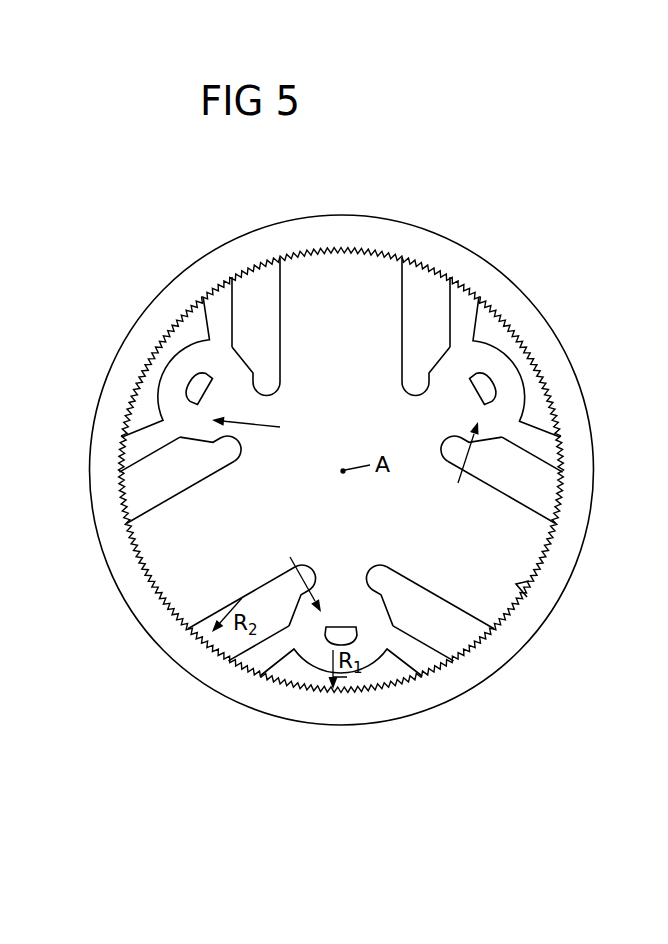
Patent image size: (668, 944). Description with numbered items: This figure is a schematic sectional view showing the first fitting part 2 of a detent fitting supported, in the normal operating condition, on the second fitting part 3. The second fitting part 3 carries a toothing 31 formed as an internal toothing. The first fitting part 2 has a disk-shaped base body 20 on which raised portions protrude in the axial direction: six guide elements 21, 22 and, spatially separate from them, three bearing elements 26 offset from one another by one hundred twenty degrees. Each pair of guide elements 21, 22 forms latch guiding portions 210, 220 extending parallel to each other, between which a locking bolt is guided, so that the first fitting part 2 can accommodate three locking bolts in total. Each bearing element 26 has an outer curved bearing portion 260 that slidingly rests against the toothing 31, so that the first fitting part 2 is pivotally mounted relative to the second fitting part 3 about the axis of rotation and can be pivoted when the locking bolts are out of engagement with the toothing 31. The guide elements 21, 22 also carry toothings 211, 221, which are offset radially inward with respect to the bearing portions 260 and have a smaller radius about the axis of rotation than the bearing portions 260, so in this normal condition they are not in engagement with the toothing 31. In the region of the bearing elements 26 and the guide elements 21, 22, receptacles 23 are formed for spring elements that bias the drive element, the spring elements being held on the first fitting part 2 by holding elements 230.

The first fitting part 2 is at (343, 482).
The second fitting part 3 is at (175, 650).
The disk-shaped base body 20 is at (528, 550).
The guide element 21 is at (299, 452).
The guide element 22 is at (408, 464).
The receptacle 23 is at (345, 514).
The bearing element 26 is at (147, 393).
The toothing 31 is at (527, 586).
The latch guiding portion 210 is at (403, 343).
The toothing 211 is at (445, 270).
The latch guiding portion 220 is at (280, 338).
The toothing 221 is at (243, 268).
The holding element 230 is at (204, 388).
The outer curved bearing portion 260 is at (177, 325).